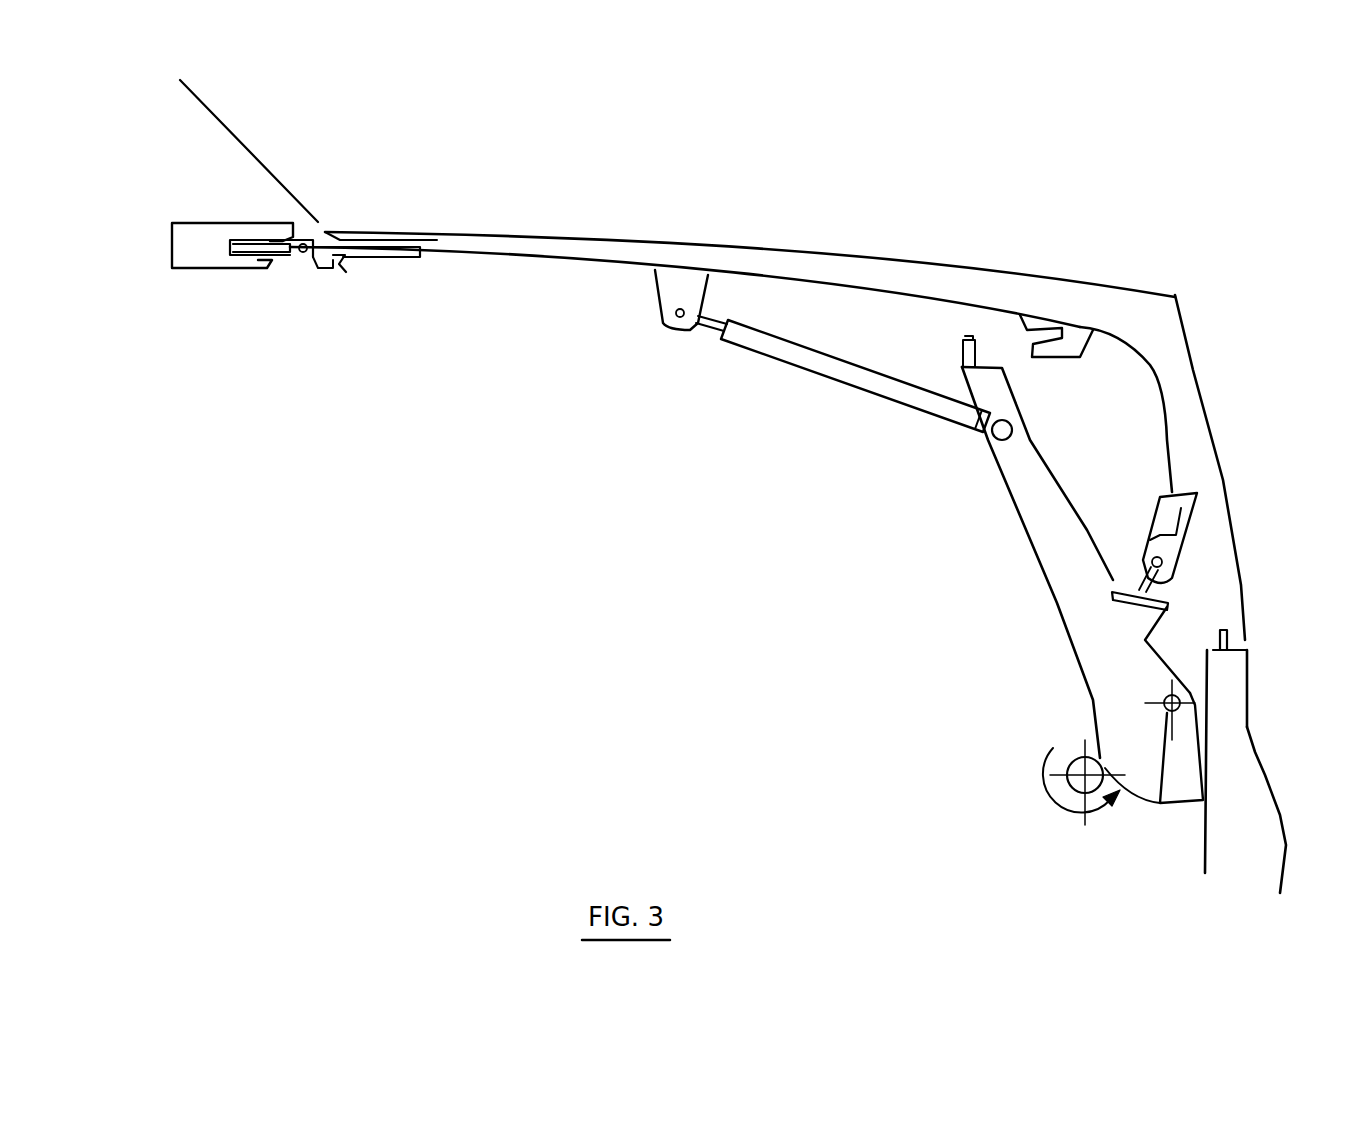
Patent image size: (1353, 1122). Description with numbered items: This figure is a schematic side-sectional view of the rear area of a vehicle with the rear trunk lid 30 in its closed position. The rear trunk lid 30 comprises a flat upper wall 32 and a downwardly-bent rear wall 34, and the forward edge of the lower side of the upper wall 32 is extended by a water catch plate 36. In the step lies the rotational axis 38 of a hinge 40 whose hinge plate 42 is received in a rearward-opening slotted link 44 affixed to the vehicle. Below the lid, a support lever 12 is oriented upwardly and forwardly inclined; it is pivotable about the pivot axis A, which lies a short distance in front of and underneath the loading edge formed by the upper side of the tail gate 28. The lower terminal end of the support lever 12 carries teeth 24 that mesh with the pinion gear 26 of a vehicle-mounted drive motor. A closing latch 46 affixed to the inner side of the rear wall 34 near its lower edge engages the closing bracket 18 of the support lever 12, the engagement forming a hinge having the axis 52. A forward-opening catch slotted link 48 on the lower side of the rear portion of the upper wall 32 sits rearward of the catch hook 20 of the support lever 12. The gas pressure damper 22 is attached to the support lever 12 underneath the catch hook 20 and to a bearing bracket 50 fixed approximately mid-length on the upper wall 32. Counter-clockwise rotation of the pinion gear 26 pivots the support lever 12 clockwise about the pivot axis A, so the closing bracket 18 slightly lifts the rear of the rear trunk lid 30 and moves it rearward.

The support lever 12 is at (1032, 487).
The closing bracket 18 is at (1130, 582).
The catch hook 20 is at (973, 333).
The gas pressure damper 22 is at (850, 377).
The teeth 24 is at (1147, 785).
The pinion gear 26 is at (1078, 785).
The tail gate 28 is at (1255, 780).
The rear trunk lid 30 is at (810, 258).
The upper wall 32 is at (636, 247).
The rear wall 34 is at (1198, 433).
The water catch plate 36 is at (333, 260).
The rotational axis 38 is at (305, 247).
The hinge 40 is at (300, 256).
The hinge plate 42 is at (253, 247).
The slotted link 44 is at (200, 250).
The closing latch 46 is at (1190, 487).
The catch slotted link 48 is at (1080, 333).
The bearing bracket 50 is at (677, 284).
The axis 52 is at (1160, 580).
The pivot axis A is at (1157, 803).